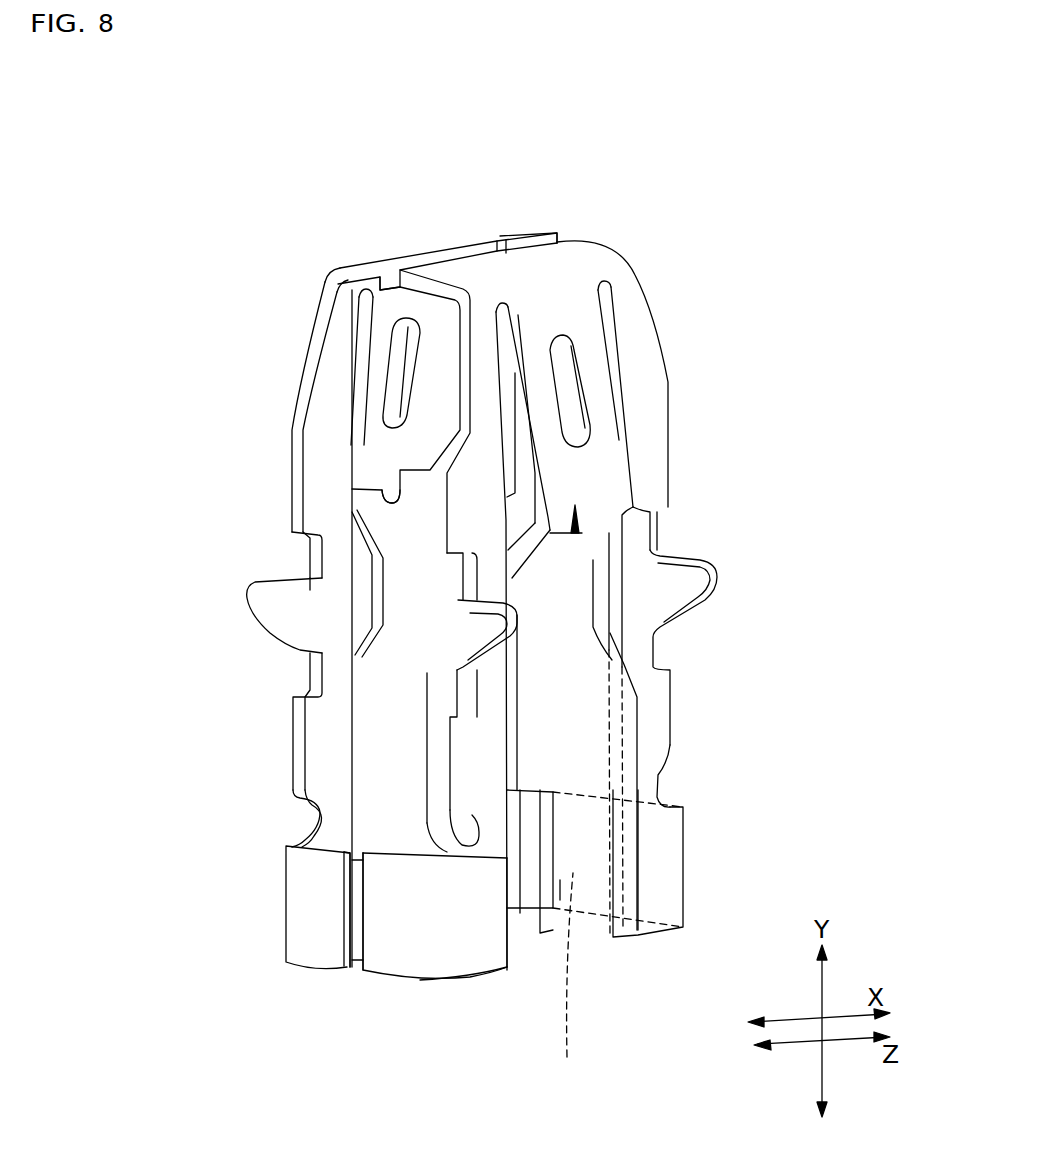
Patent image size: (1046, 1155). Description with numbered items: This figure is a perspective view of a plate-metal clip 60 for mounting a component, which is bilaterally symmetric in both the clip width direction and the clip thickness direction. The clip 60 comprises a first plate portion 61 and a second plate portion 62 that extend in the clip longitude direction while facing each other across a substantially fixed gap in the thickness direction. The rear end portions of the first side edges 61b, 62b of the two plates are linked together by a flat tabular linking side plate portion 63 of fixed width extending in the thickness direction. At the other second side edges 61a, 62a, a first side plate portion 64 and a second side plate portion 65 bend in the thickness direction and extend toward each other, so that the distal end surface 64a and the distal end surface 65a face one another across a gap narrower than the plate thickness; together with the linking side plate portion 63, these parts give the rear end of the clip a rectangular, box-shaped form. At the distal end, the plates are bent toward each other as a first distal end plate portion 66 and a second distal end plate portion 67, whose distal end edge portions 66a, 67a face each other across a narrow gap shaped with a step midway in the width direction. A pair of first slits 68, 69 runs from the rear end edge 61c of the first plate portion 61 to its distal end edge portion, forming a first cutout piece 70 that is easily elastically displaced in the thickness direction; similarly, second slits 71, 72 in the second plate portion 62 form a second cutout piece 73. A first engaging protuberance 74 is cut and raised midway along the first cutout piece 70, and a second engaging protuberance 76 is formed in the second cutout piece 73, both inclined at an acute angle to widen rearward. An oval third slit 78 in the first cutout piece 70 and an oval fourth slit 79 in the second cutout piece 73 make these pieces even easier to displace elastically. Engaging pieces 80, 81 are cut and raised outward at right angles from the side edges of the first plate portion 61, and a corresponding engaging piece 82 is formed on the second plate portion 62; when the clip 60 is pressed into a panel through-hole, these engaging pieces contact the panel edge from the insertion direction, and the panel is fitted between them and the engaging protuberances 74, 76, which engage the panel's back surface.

The clip 60 is at (698, 258).
The first plate portion 61 is at (478, 921).
The second side edge of the first plate portion 61a is at (400, 935).
The first side edge of the first plate portion 61b is at (670, 745).
The rear end edge 61c is at (470, 977).
The second plate portion 62 is at (322, 762).
The second side edge of the second plate portion 62a is at (293, 737).
The first side edge of the second plate portion 62b is at (520, 725).
The linking side plate portion 63 is at (569, 983).
The first side plate portion 64 is at (394, 938).
The distal end surface of the first side plate portion 64a is at (360, 893).
The second side plate portion 65 is at (310, 930).
The distal end surface of the second side plate portion 65a is at (347, 960).
The first distal end plate portion 66 is at (568, 265).
The distal end edge portion of the first distal end plate portion 66a is at (500, 245).
The second distal end plate portion 67 is at (445, 237).
The distal end edge portion of the second distal end plate portion 67a is at (418, 263).
The first slit 68 is at (523, 923).
The first slit 69 is at (627, 940).
The first cutout piece 70 is at (581, 887).
The second slit 71 is at (352, 347).
The second slit 72 is at (450, 372).
The second cutout piece 73 is at (378, 787).
The first engaging protuberance 74 is at (593, 509).
The second engaging protuberance 76 is at (385, 492).
The third slit 78 is at (580, 405).
The fourth slit 79 is at (392, 383).
The engaging piece 80 is at (480, 627).
The engaging piece 81 is at (680, 574).
The engaging piece 82 is at (260, 588).